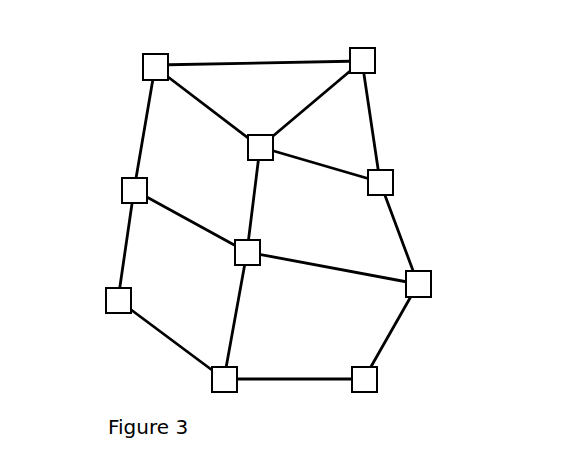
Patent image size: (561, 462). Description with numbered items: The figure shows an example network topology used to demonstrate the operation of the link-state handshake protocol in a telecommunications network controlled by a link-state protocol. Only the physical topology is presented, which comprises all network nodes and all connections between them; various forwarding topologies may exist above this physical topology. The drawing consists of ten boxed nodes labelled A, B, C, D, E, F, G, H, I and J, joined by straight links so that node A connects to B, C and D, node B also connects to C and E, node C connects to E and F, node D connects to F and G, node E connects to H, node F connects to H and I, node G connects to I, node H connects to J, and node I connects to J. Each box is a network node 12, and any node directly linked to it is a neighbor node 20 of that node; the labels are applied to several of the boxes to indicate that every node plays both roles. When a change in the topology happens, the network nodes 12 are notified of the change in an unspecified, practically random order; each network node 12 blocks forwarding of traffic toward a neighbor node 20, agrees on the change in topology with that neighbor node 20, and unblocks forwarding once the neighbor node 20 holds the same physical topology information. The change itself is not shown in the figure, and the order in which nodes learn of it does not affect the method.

The network node 12 is at (335, 173).
The neighbor node 20 is at (250, 232).
The node A is at (155, 67).
The node B is at (362, 60).
The node C is at (260, 147).
The node D is at (134, 190).
The node E is at (380, 182).
The node F is at (247, 252).
The node G is at (118, 300).
The node H is at (418, 284).
The node I is at (224, 379).
The node J is at (364, 379).